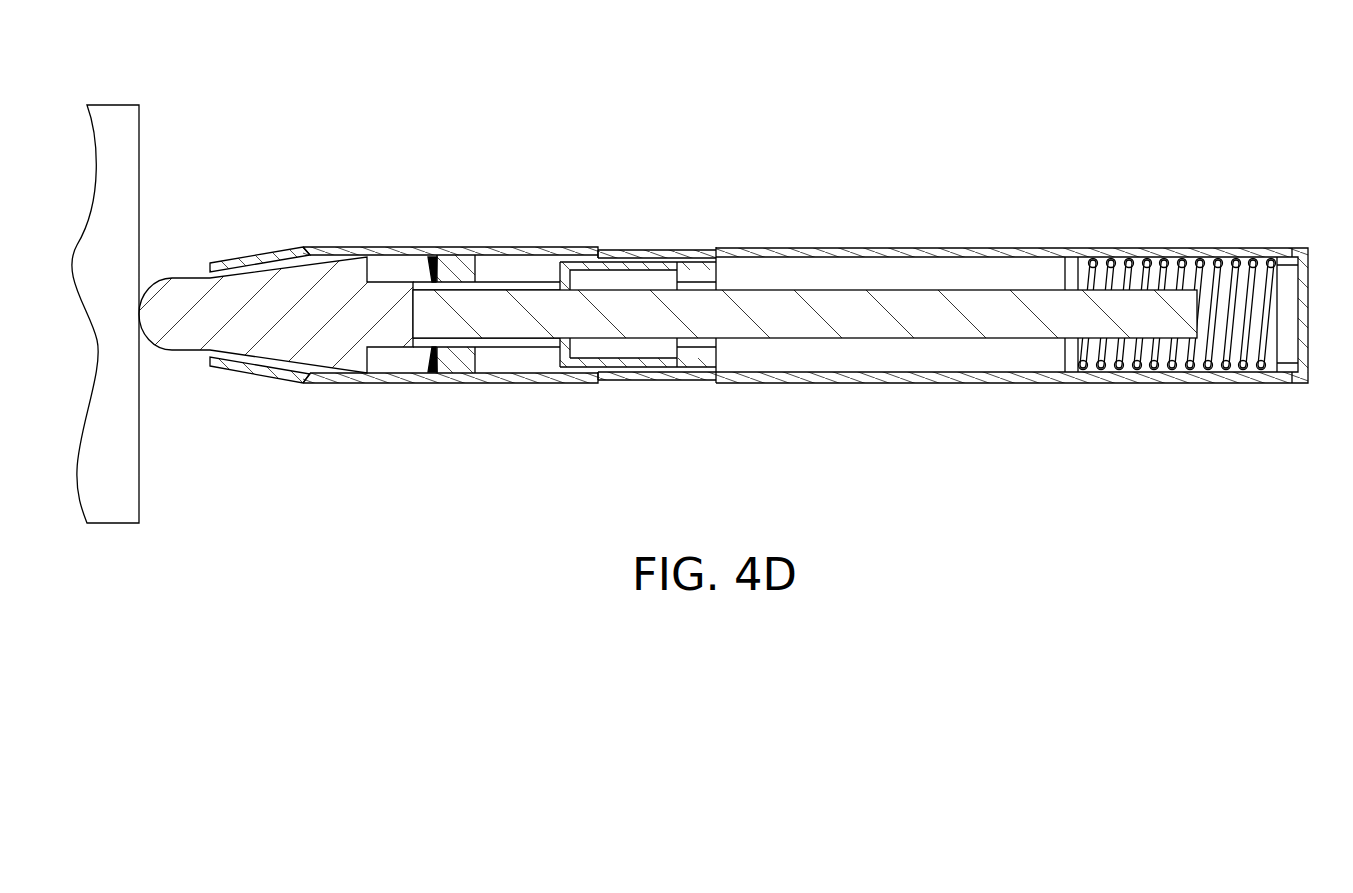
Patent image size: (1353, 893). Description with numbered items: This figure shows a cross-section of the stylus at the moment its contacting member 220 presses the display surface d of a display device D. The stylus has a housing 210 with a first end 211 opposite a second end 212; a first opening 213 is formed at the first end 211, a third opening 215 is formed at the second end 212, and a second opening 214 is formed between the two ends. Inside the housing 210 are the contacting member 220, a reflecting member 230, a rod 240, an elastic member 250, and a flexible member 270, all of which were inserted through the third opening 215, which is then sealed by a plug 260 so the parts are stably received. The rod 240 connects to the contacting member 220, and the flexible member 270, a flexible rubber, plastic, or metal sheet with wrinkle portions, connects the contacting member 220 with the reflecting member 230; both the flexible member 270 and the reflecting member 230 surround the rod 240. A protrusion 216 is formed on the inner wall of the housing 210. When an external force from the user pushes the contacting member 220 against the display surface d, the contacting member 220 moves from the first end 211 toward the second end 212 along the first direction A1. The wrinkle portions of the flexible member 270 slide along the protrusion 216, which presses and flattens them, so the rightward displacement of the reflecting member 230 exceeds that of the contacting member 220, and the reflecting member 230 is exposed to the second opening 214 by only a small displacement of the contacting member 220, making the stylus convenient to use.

The display device D is at (109, 127).
The display surface d is at (142, 141).
The housing 210 is at (333, 248).
The first end 211 is at (217, 254).
The second end 212 is at (1294, 231).
The first opening 213 is at (210, 352).
The second opening 214 is at (706, 247).
The third opening 215 is at (1292, 385).
The protrusion 216 is at (444, 262).
The contacting member 220 is at (168, 305).
The reflecting member 230 is at (612, 268).
The rod 240 is at (900, 305).
The elastic member 250 is at (1180, 256).
The plug 260 is at (1308, 248).
The flexible member 270 is at (512, 284).
The first direction A1 is at (683, 148).